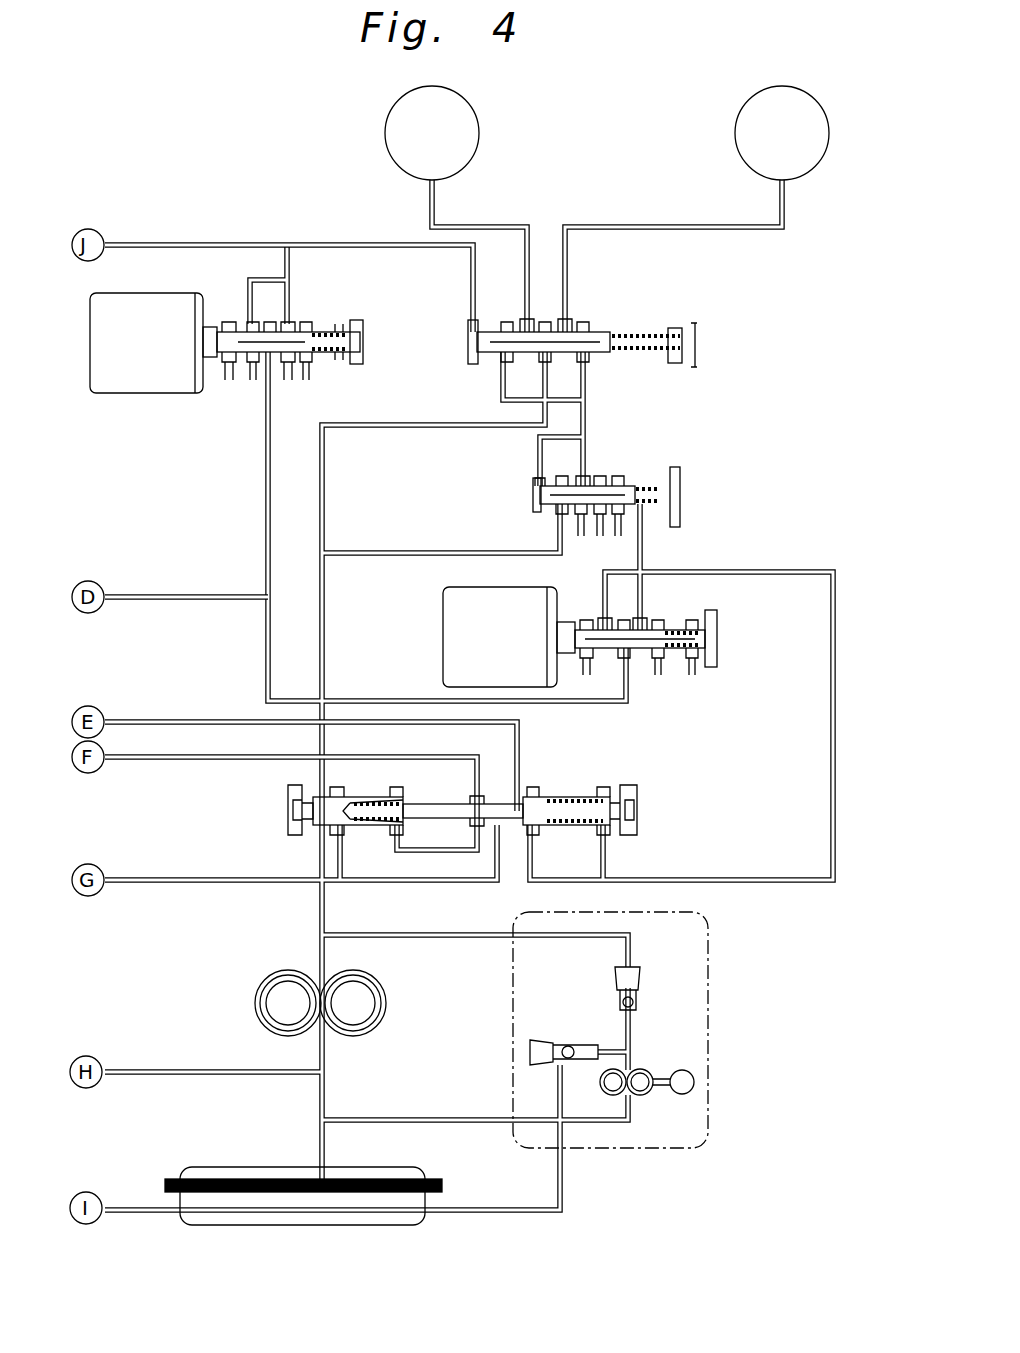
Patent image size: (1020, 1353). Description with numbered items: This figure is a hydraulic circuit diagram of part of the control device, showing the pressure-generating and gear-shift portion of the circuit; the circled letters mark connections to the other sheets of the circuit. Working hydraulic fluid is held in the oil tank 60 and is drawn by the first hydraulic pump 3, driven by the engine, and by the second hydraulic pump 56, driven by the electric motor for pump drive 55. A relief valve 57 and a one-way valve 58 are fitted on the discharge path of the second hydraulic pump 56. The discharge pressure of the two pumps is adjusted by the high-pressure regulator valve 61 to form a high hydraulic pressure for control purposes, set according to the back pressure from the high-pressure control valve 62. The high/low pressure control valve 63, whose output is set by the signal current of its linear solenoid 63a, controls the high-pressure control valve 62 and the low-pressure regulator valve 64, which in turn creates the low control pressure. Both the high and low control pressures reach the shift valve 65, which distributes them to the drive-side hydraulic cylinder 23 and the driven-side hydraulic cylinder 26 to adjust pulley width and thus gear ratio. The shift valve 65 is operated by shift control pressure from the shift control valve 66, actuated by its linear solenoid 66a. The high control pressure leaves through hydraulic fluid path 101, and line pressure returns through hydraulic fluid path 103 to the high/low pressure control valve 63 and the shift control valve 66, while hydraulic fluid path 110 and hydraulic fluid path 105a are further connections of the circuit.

The hydraulic fluid path 110 is at (172, 242).
The hydraulic fluid path 103 is at (188, 596).
The hydraulic fluid path 105a is at (186, 718).
The hydraulic fluid path 101 is at (185, 761).
The driven-side hydraulic cylinder 26 is at (456, 209).
The drive-side hydraulic cylinder 23 is at (697, 209).
The linear solenoid 66a is at (146, 343).
The shift control valve 66 is at (260, 367).
The shift valve 65 is at (600, 334).
The low-pressure regulator valve 64 is at (626, 486).
The linear solenoid 63a is at (500, 637).
The high/low pressure control valve 63 is at (677, 626).
The high-pressure regulator valve 61 is at (352, 798).
The high-pressure control valve 62 is at (573, 798).
The first hydraulic pump 3 is at (381, 979).
The electric motor for pump drive 55 is at (694, 1083).
The one-way valve 58 is at (640, 976).
The relief valve 57 is at (558, 1044).
The second hydraulic pump 56 is at (633, 1068).
The oil tank 60 is at (420, 1169).